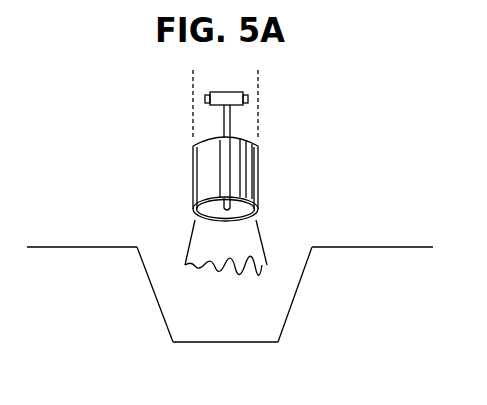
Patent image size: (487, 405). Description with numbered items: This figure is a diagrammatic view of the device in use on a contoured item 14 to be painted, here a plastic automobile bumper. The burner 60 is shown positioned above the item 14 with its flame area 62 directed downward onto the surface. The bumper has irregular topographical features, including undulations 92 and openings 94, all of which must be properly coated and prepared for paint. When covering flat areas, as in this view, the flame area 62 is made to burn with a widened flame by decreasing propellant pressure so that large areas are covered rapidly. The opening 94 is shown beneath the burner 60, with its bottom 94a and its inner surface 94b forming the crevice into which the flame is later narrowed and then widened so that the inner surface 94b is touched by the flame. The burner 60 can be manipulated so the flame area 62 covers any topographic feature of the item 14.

The burner 60 is at (245, 165).
The flame area 62 is at (253, 250).
The item 14 is at (375, 247).
The undulations 92 is at (87, 247).
The openings 94 is at (168, 289).
The bottom 94a is at (225, 342).
The inner surface 94b is at (300, 279).